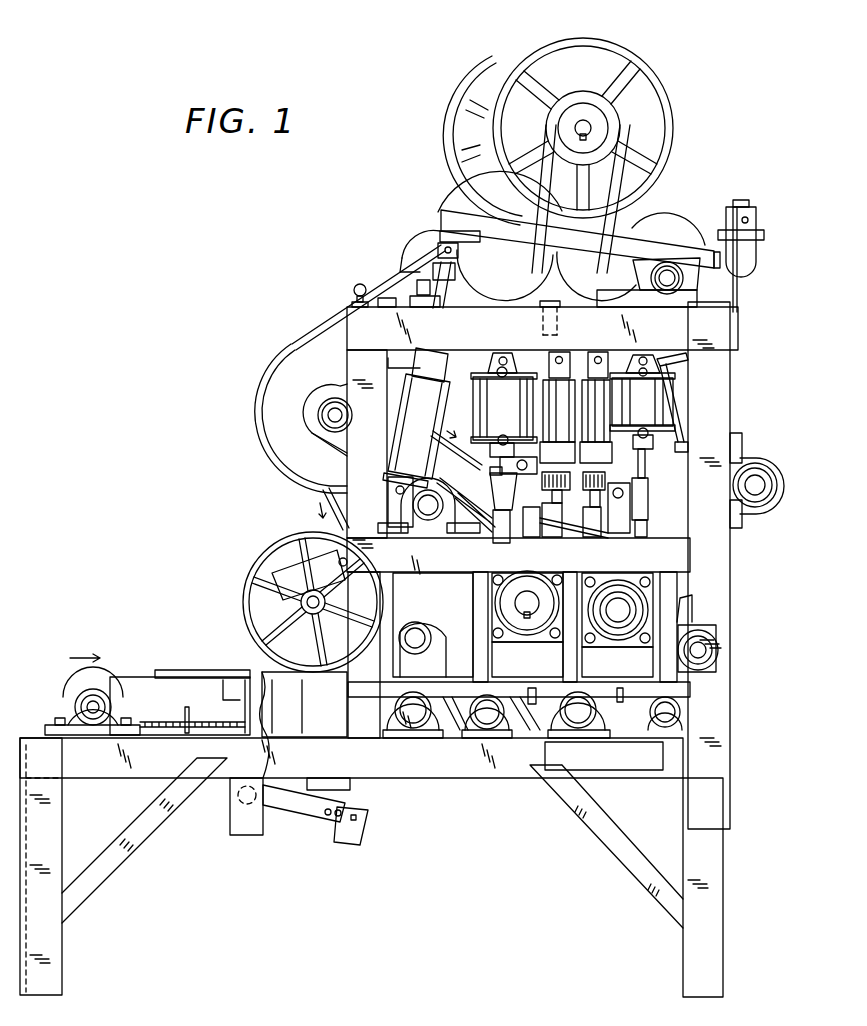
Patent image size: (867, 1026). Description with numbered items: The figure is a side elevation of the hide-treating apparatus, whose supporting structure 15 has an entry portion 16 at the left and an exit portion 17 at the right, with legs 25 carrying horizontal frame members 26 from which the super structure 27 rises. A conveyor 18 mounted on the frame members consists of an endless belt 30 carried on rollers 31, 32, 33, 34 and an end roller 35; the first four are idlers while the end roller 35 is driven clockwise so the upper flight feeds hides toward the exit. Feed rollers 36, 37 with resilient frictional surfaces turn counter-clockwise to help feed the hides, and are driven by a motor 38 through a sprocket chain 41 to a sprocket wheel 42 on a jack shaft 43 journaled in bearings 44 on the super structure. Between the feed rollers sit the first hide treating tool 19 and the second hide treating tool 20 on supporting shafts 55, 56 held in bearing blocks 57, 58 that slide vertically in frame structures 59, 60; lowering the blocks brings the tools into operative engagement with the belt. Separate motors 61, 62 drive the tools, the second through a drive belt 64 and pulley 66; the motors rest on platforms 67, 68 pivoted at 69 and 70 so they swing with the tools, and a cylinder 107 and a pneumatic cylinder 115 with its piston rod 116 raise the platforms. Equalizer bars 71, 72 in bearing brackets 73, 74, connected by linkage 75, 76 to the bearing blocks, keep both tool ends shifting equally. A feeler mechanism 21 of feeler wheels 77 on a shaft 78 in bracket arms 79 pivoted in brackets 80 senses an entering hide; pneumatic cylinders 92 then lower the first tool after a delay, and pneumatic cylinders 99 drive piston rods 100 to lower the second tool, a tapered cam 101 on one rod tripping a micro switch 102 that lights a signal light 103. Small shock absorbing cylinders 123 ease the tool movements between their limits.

The supporting structure 15 is at (90, 922).
The entry portion 16 is at (54, 640).
The exit portion 17 is at (749, 609).
The conveyor 18 is at (166, 660).
The first hide treating tool 19 is at (622, 648).
The second hide treating tool 20 is at (532, 645).
The feeler mechanism 21 is at (230, 591).
The legs 25 is at (58, 990).
The horizontal frame members 26 is at (424, 770).
The super structure 27 is at (718, 408).
The endless belt 30 is at (126, 675).
The roller 31 is at (70, 666).
The roller 32 is at (382, 703).
The roller 33 is at (448, 725).
The roller 34 is at (505, 725).
The end roller 35 is at (623, 740).
The feed roller 36 is at (432, 615).
The feed roller 37 is at (690, 624).
The motor 38 is at (476, 190).
The sprocket chain 41 is at (393, 285).
The sprocket wheel 42 is at (272, 440).
The jack shaft 43 is at (330, 423).
The bearings 44 is at (318, 412).
The supporting shaft 55 is at (620, 598).
The supporting shaft 56 is at (528, 590).
The bearing block 57 is at (612, 644).
The bearing block 58 is at (500, 640).
The frame structure 59 is at (668, 672).
The frame structure 60 is at (472, 604).
The motor 61 is at (485, 76).
The motor 62 is at (648, 98).
The drive belt 64 is at (640, 212).
The pulley 66 is at (503, 602).
The platform 67 is at (417, 232).
The platform 68 is at (660, 233).
The pivot 69 is at (409, 293).
The pivot 70 is at (668, 272).
The equalizer bar 71 is at (757, 482).
The equalizer bar 72 is at (430, 513).
The bearing bracket 73 is at (742, 520).
The bearing bracket 74 is at (458, 522).
The linkage 75 is at (658, 486).
The linkage 76 is at (470, 506).
The feeler wheels 77 is at (262, 568).
The shaft 78 is at (313, 612).
The bracket arms 79 is at (310, 572).
The brackets 80 is at (347, 560).
The pneumatic cylinder 92 is at (650, 398).
The pneumatic cylinder 99 is at (500, 403).
The piston rod 100 is at (496, 463).
The tapered cam 101 is at (498, 490).
The micro switch 102 is at (528, 530).
The light 103 is at (350, 291).
The cylinder 107 is at (688, 372).
The pneumatic cylinder 115 is at (406, 437).
The piston rod 116 is at (449, 296).
The shock absorbing cylinders 123 is at (597, 420).